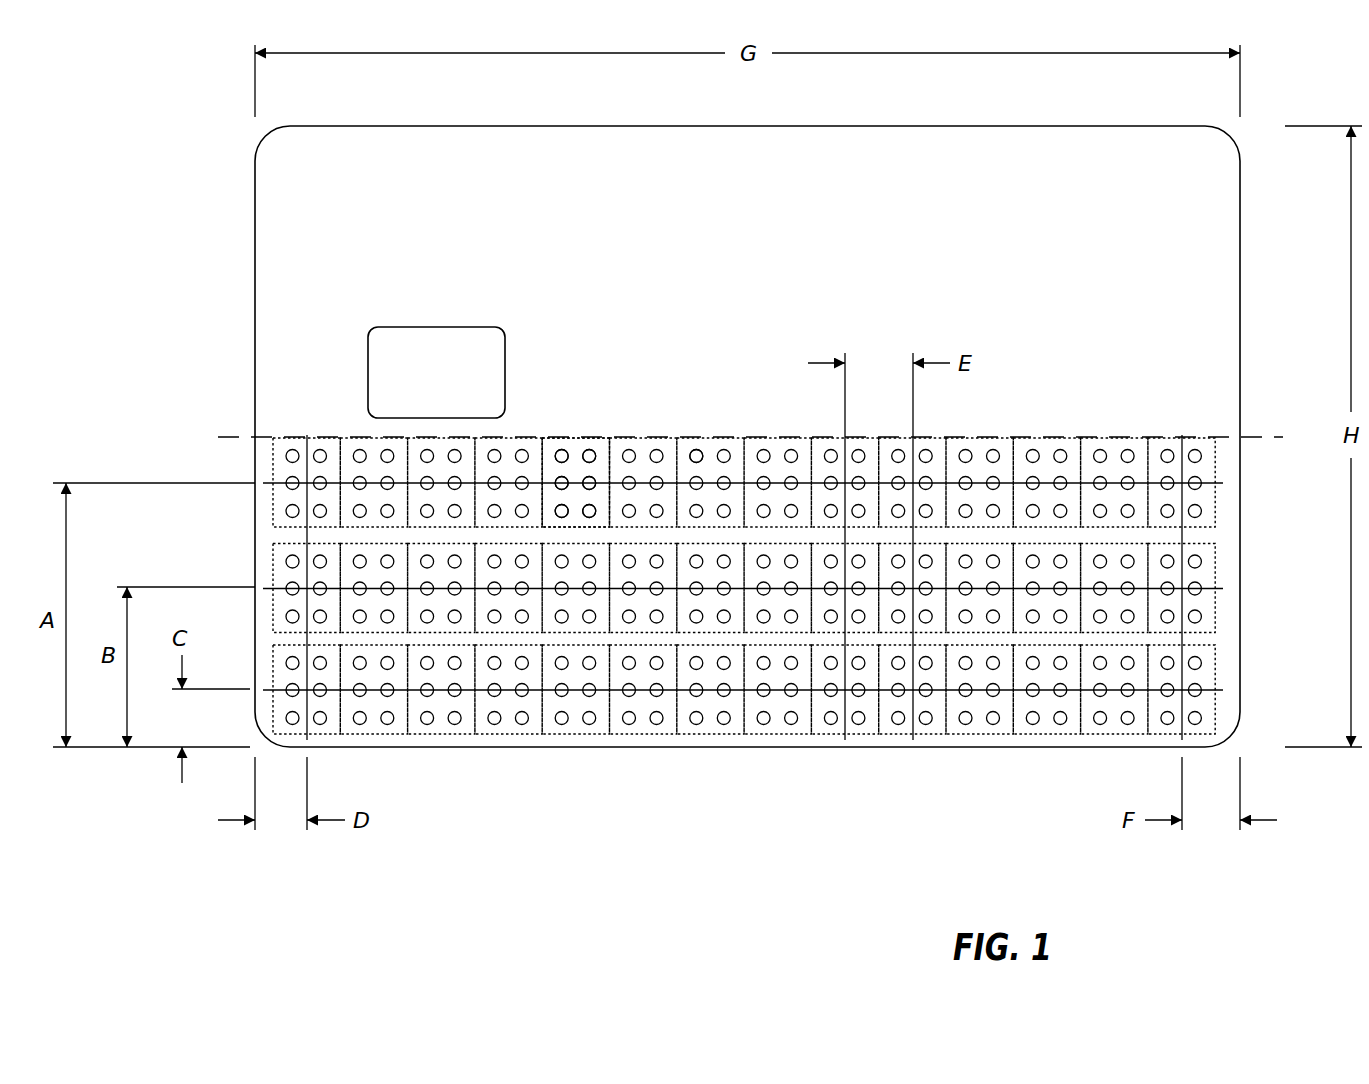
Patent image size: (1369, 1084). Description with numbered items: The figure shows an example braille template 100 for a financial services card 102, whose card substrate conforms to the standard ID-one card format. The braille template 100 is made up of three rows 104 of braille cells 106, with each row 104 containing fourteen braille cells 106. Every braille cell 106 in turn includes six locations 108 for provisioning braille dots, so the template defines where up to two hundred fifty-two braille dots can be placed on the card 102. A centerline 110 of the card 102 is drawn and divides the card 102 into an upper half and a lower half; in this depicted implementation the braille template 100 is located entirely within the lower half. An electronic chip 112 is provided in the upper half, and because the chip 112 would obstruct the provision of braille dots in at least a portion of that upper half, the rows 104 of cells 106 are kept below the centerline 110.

The braille template 100 is at (728, 469).
The financial services card 102 is at (255, 183).
The row 104 is at (273, 462).
The braille cell 106 is at (575, 445).
The location 108 is at (696, 447).
The centerline 110 is at (233, 437).
The electronic chip 112 is at (395, 327).